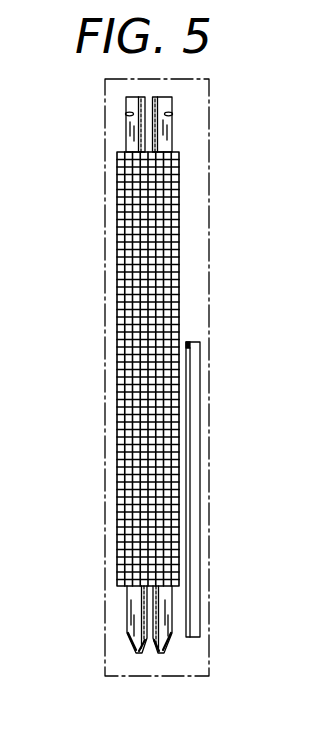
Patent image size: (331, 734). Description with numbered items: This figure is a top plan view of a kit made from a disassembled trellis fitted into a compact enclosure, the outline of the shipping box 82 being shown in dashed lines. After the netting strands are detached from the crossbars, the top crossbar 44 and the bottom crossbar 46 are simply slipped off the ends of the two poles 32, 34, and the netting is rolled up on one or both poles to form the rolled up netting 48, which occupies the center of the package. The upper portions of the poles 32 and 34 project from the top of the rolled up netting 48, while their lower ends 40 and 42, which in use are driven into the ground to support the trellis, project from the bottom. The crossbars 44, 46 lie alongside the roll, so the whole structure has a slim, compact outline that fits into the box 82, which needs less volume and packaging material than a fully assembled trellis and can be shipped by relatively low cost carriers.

The box 82 is at (209, 103).
The rolled up netting 48 is at (122, 270).
The pole 32 is at (126, 131).
The pole 34 is at (172, 134).
The lower end 40 is at (136, 614).
The lower end 42 is at (166, 638).
The top crossbar 44 is at (187, 343).
The bottom crossbar 46 is at (198, 383).